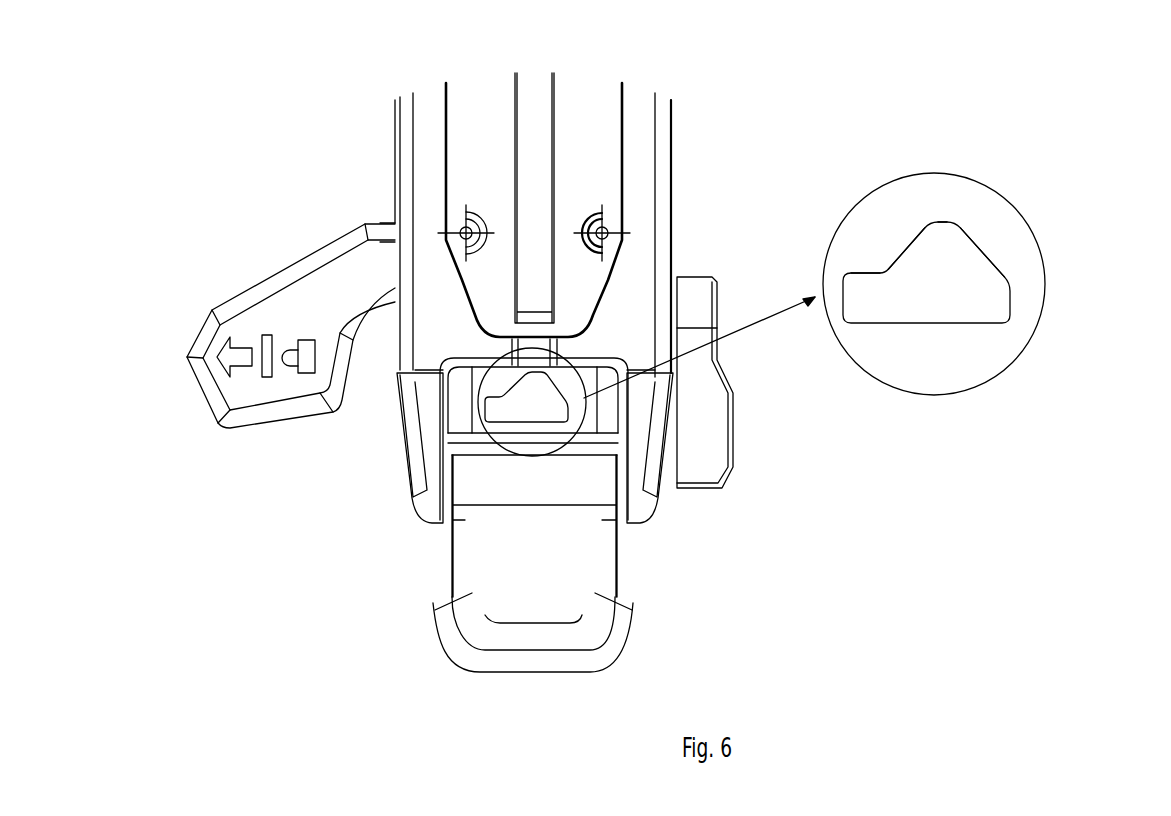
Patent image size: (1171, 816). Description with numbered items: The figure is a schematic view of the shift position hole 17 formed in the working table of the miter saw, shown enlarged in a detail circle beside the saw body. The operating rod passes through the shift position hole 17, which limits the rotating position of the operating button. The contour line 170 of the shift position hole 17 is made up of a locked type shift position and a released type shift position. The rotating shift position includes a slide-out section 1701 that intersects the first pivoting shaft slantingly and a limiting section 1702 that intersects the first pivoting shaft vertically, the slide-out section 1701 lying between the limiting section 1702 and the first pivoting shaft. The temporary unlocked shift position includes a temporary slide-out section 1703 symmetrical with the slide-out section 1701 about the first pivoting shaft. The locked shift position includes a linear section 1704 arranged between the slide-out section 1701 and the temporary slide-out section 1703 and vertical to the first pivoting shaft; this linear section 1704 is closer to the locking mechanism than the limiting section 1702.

The shift position hole 17 is at (943, 287).
The contour line 170 is at (1010, 304).
The slide-out section 1701 is at (903, 250).
The limiting section 1702 is at (865, 273).
The temporary slide-out section 1703 is at (982, 250).
The linear section 1704 is at (943, 222).